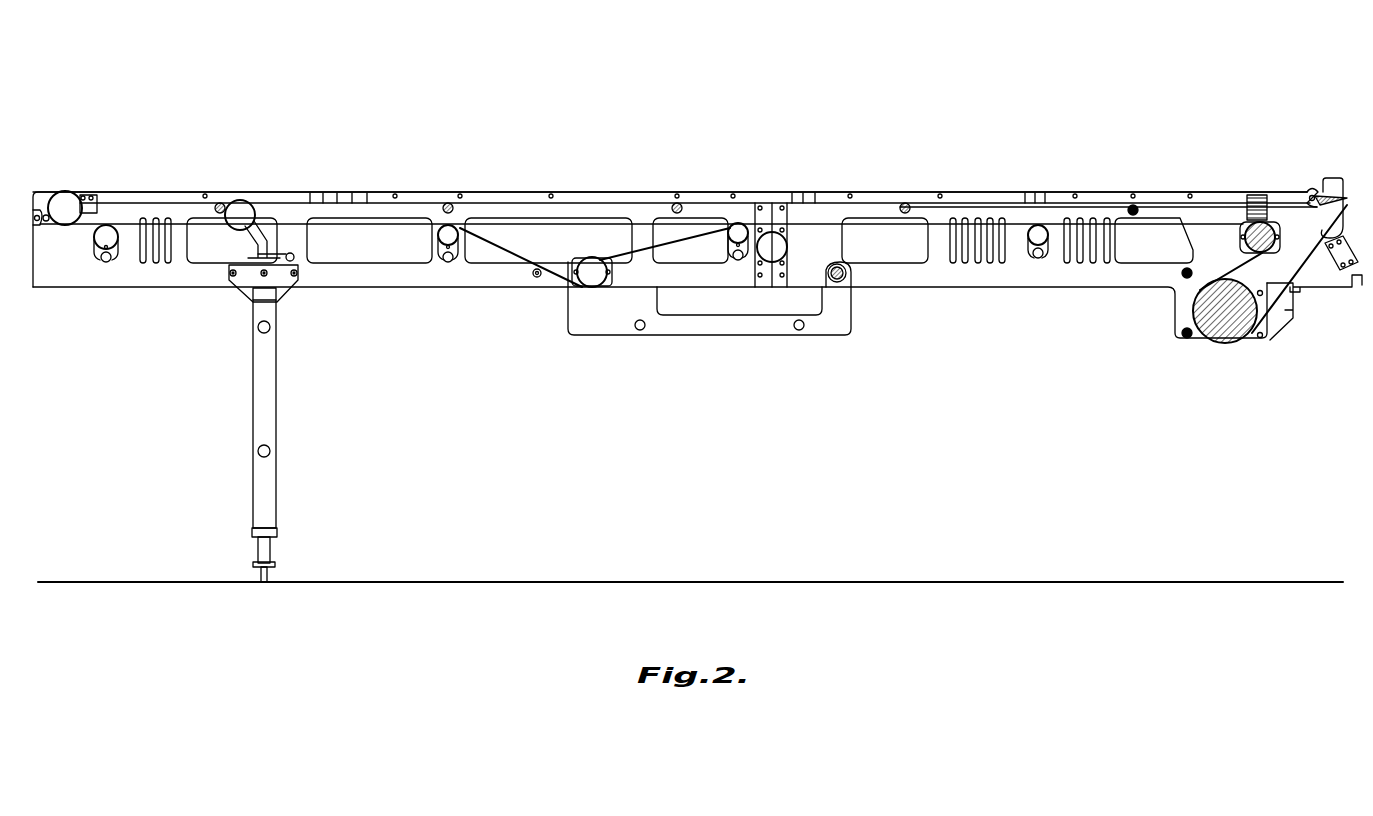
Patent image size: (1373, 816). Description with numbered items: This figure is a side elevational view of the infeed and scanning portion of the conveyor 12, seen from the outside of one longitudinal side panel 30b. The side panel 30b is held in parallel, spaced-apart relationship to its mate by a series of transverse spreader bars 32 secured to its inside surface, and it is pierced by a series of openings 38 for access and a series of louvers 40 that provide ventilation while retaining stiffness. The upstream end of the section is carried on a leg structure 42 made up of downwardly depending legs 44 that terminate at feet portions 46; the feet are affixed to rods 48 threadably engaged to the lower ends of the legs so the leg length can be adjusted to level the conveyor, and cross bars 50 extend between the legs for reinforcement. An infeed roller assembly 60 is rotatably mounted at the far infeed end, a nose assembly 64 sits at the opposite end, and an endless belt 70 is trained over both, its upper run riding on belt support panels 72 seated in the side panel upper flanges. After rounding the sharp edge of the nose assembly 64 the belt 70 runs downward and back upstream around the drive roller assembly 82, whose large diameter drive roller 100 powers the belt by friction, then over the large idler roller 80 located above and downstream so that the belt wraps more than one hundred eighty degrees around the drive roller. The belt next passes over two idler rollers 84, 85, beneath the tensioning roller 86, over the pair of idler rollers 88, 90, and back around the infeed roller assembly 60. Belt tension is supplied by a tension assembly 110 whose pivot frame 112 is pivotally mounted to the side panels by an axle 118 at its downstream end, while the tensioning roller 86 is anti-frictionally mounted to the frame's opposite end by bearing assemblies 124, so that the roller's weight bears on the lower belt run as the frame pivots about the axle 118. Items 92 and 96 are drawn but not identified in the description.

The conveyor 12 is at (144, 48).
The longitudinal side panel 30b is at (47, 275).
The transverse spreader bars 32 is at (222, 205).
The openings 38 is at (918, 218).
The louvers 40 is at (978, 255).
The leg structure 42 is at (290, 423).
The legs 44 is at (270, 395).
The feet portions 46 is at (275, 565).
The rods 48 is at (262, 551).
The cross bars 50 is at (262, 450).
The infeed roller assembly 60 is at (67, 203).
The nose assembly 64 is at (1328, 192).
The endless belt 70 is at (1075, 193).
The belt support panels 72 is at (668, 200).
The idler roller 80 is at (1252, 232).
The drive roller assembly 82 is at (1238, 352).
The idler roller 84 is at (1038, 232).
The idler roller 85 is at (738, 228).
The tensioning roller 86 is at (590, 285).
The idler roller 88 is at (448, 230).
The idler roller 90 is at (106, 232).
The pivot roller 92 is at (245, 213).
The drive cylinder 96 is at (1258, 197).
The drive roller 100 is at (1222, 337).
The tension assembly 110 is at (700, 350).
The pivot frame 112 is at (772, 337).
The axle 118 is at (838, 280).
The bearing assemblies 124 is at (590, 268).